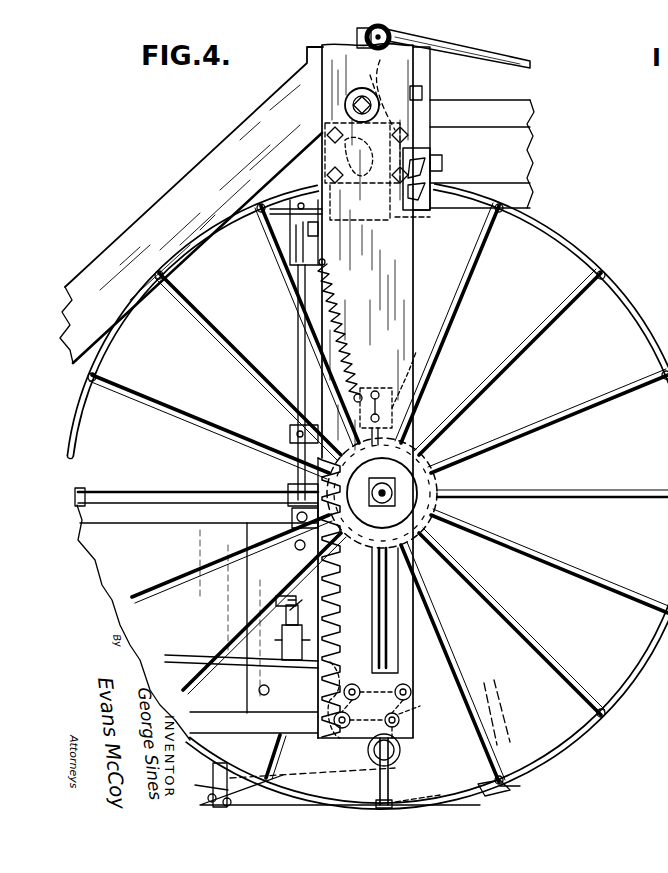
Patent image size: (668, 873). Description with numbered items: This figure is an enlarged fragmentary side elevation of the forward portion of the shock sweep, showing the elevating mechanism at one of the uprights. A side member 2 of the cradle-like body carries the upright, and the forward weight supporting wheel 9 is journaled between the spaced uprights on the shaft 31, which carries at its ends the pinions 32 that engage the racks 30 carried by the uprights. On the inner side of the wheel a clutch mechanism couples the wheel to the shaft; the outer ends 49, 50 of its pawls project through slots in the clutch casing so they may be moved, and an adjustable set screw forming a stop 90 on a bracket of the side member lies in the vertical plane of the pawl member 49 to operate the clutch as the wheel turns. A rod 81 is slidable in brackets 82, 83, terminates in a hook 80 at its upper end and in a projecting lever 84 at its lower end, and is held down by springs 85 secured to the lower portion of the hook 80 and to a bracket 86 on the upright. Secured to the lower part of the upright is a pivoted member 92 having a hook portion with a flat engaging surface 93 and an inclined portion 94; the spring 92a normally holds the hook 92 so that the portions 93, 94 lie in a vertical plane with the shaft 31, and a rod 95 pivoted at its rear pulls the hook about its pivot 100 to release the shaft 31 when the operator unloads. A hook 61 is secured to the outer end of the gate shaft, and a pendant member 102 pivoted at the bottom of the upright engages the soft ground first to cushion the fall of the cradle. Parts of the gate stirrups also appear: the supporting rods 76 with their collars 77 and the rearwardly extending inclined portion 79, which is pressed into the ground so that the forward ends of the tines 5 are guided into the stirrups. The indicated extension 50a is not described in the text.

The side member 2 is at (145, 550).
The tooth or tine 5 is at (215, 790).
The forward weight supporting wheel 9 is at (555, 236).
The rack 30 is at (336, 572).
The shaft 31 is at (418, 432).
The pinion 32 is at (425, 528).
The outer end of pawl 49 is at (482, 477).
The outer end of pawl 50 is at (290, 485).
The frame bar extension 50a is at (417, 798).
The hook 61 is at (366, 146).
The supporting rod 76 is at (502, 722).
The collar or washer 77 is at (514, 152).
The rearwardly extending inclined portion 79 is at (491, 780).
The hook 80 is at (292, 190).
The rod 81 is at (300, 338).
The bracket 82 is at (264, 238).
The bracket 83 is at (292, 440).
The projecting lever 84 is at (298, 516).
The spring 85 is at (300, 290).
The bracket 86 is at (400, 385).
The stop 90 is at (284, 660).
The pivoted hook member 92 is at (412, 690).
The spring 92a is at (368, 750).
The flat engaging surface 93 is at (412, 650).
The inclined portion 94 is at (400, 630).
The rod 95 is at (200, 648).
The pivot 100 is at (378, 780).
The pendant member 102 is at (236, 748).